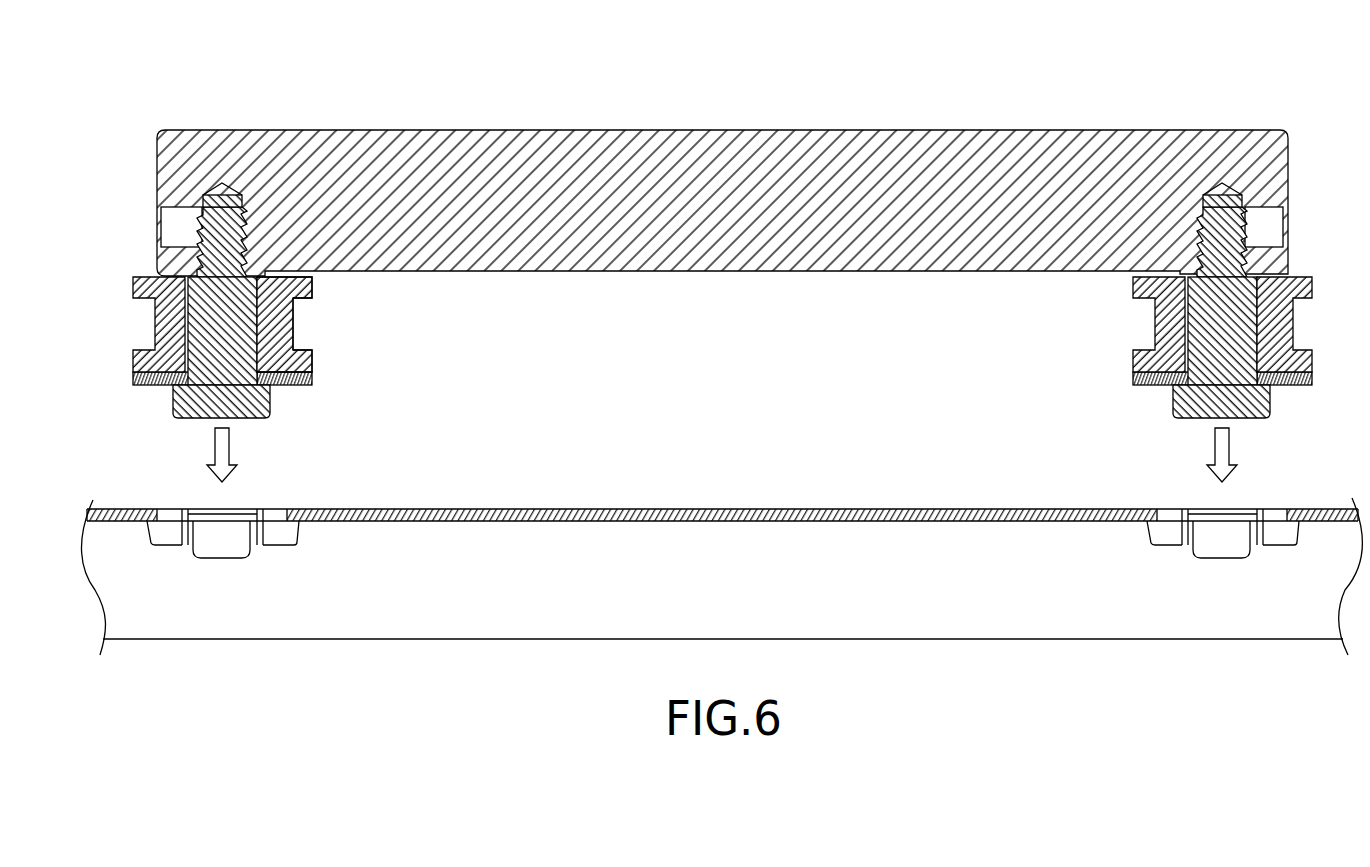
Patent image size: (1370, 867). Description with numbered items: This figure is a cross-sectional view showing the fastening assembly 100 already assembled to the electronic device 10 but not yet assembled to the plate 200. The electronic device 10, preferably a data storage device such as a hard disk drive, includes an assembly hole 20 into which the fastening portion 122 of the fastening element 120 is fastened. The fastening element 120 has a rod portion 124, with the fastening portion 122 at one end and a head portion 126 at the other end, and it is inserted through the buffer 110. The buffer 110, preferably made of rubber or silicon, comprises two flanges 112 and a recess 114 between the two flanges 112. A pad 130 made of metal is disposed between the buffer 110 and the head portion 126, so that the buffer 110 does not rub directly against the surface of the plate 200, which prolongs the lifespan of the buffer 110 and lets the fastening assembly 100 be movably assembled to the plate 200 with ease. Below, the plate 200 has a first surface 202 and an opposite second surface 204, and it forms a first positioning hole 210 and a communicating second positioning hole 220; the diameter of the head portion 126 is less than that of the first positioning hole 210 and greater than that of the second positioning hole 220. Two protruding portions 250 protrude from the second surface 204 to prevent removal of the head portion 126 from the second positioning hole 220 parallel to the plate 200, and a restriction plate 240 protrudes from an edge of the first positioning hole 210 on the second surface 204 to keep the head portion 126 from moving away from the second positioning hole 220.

The electronic device 10 is at (758, 142).
The assembly hole 20 is at (218, 198).
The fastening assembly 100 is at (234, 319).
The buffer 110 is at (340, 345).
The flanges 112 is at (312, 284).
The recess 114 is at (303, 332).
The fastening element 120 is at (185, 320).
The fastening portion 122 is at (217, 230).
The rod portion 124 is at (210, 307).
The head portion 126 is at (175, 398).
The pad 130 is at (134, 378).
The plate 200 is at (720, 539).
The first surface 202 is at (721, 509).
The second surface 204 is at (690, 522).
The first positioning hole 210 is at (167, 509).
The second positioning hole 220 is at (243, 509).
The restriction plate 240 is at (223, 547).
The protruding portions 250 is at (278, 537).